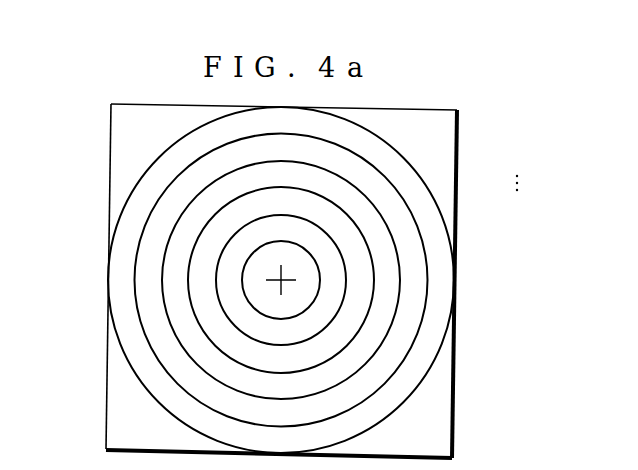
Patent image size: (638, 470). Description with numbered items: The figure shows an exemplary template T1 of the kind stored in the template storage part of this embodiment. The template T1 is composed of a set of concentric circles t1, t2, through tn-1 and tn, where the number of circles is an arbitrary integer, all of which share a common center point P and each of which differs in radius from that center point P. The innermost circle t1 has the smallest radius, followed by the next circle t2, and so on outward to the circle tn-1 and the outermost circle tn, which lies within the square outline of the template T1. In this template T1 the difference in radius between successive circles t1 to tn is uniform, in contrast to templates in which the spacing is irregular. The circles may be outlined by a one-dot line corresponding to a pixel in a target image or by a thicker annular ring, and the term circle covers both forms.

The template T1 is at (110, 157).
The concentric circle t1 is at (298, 243).
The concentric circle t2 is at (337, 243).
The concentric circle tn-1 is at (423, 243).
The concentric circle tn is at (451, 245).
The center point P is at (285, 282).